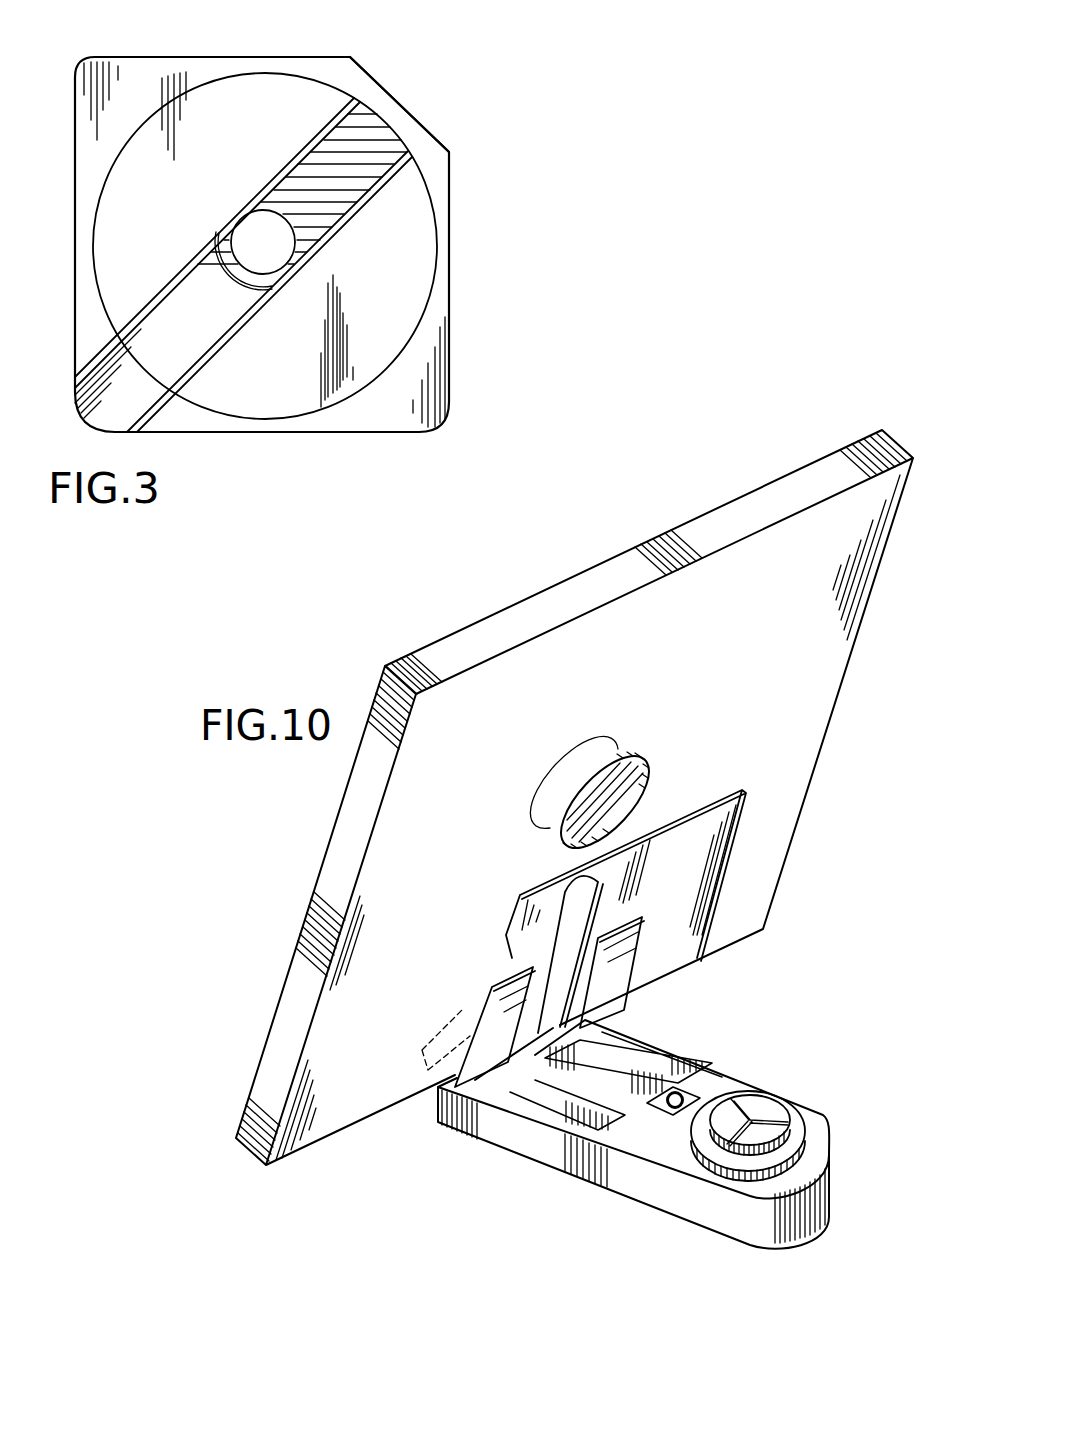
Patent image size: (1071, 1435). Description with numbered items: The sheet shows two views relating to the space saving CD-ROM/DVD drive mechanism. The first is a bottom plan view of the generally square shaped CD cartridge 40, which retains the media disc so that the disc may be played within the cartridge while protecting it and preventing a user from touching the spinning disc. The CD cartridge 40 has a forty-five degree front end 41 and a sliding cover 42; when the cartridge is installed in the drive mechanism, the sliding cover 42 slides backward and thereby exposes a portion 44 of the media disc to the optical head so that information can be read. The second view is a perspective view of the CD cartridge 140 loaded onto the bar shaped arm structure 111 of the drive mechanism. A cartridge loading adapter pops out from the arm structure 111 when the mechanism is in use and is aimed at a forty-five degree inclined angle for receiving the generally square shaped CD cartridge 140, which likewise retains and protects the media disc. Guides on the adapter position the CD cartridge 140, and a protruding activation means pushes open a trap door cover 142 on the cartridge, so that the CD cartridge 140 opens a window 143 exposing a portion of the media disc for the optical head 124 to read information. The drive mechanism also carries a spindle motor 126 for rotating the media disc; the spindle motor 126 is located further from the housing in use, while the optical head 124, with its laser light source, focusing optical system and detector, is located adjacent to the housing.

In FIG. 3, the CD cartridge 40 is at (451, 101).
In FIG. 3, the 45° front end 41 is at (446, 140).
In FIG. 3, the sliding cover 42 is at (188, 340).
In FIG. 3, the portion of the media disc 44 is at (322, 157).
In FIG. 10, the CD cartridge 140 is at (848, 672).
In FIG. 10, the trap door cover 142 is at (712, 855).
In FIG. 10, the window 143 is at (568, 932).
In FIG. 10, the optical head 124 is at (675, 1092).
In FIG. 10, the spindle motor 126 is at (780, 1108).
In FIG. 10, the bar shaped arm structure 111 is at (632, 1206).